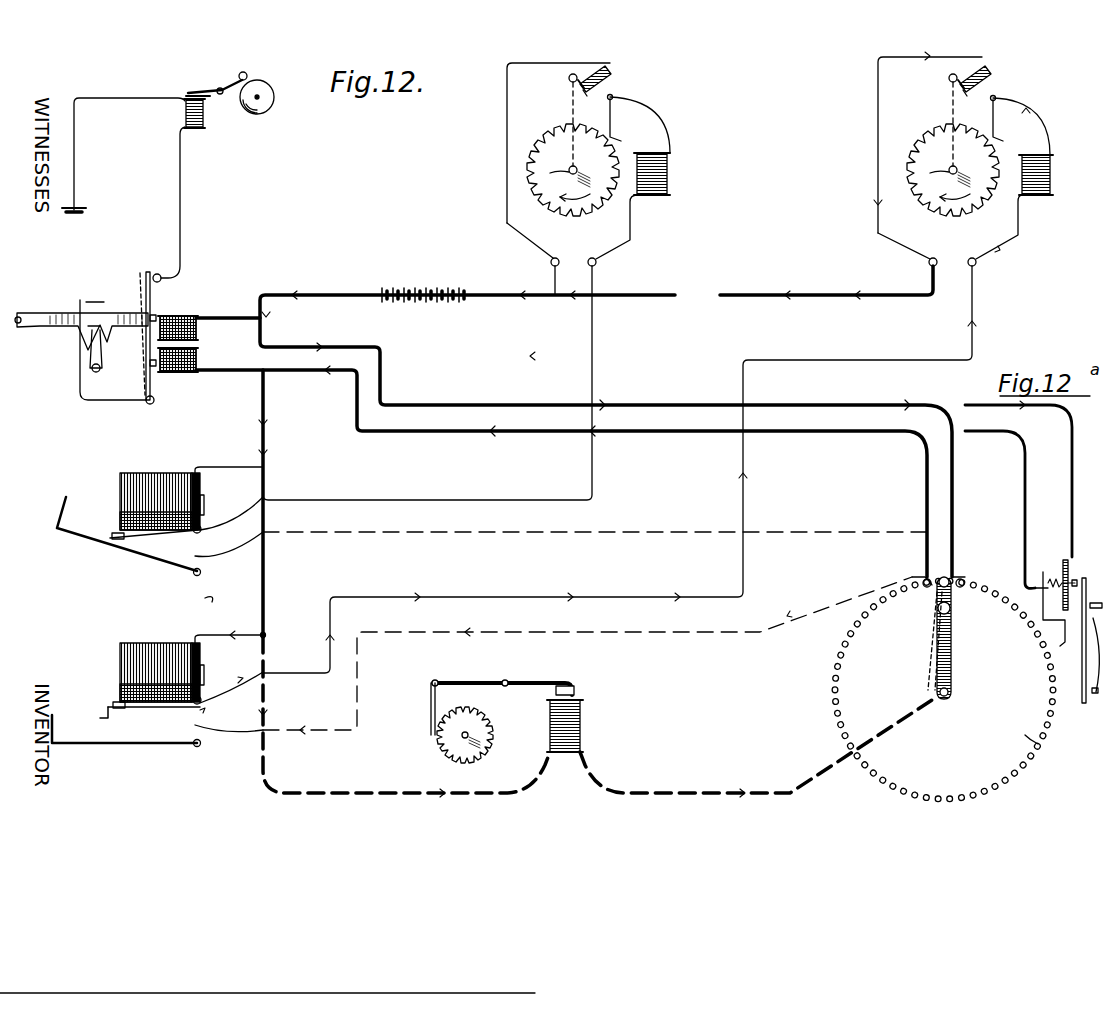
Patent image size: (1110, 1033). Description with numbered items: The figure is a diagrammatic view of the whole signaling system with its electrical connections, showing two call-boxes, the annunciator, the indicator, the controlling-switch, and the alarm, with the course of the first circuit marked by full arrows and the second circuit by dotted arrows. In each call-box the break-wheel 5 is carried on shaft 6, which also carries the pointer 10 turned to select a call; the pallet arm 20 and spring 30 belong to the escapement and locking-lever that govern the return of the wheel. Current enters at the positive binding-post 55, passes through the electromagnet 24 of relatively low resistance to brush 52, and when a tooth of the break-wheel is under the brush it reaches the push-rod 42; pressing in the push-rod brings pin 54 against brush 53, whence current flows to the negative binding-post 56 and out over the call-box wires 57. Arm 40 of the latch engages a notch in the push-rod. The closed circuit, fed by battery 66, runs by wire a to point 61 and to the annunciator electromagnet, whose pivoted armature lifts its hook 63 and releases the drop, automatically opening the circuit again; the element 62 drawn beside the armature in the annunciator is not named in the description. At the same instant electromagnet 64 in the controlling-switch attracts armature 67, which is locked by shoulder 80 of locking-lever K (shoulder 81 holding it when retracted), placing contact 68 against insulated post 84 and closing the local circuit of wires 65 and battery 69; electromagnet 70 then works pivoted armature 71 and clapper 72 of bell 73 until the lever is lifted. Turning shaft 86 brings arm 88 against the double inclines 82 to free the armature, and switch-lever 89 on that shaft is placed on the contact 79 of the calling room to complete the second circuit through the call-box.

In FIG. 12, the break-wheel 5 is at (763, 149).
In FIG. 12, the shaft 6 is at (743, 182).
In FIG. 12A, the pointer 10 is at (1068, 626).
In FIG. 12, the outwardly-extending arm 20 is at (1026, 789).
In FIG. 12, the electromagnet of relatively-low resistance 24 is at (668, 186).
In FIG. 12, the spring 30 is at (884, 803).
In FIG. 12, the arm of latch H 40 is at (820, 673).
In FIG. 12, the push-rod 42 is at (569, 76).
In FIG. 12, the brush 52 is at (612, 128).
In FIG. 12, the brush 53 is at (612, 77).
In FIG. 12, the lug or pin 54 is at (776, 99).
In FIG. 12, the positive or incoming binding-post 55 is at (620, 455).
In FIG. 12, the negative or outgoing binding-post 56 is at (744, 266).
In FIG. 12, the call-box wires 57 is at (507, 135).
In FIG. 12, the point 61 is at (270, 634).
In FIG. 12, the contact 62 is at (116, 534).
In FIG. 12, the hook 63 is at (112, 548).
In FIG. 12, the electromagnet 64 is at (192, 344).
In FIG. 12, the wires of the local circuit 65 is at (78, 152).
In FIG. 12, the battery 66 is at (418, 289).
In FIG. 12, the pivoted armature 67 is at (156, 399).
In FIG. 12, the contact 68 is at (152, 262).
In FIG. 12, the battery of the local circuit 69 is at (66, 222).
In FIG. 12, the electromagnet 70 is at (184, 116).
In FIG. 12, the pivoted armature 71 is at (216, 87).
In FIG. 12, the clapper 72 is at (246, 72).
In FIG. 12, the bell 73 is at (272, 88).
In FIG. 12, the metallic contacts 79 is at (1038, 715).
In FIG. 12, the upper locking-shoulder 80 is at (152, 315).
In FIG. 12, the lower locking-shoulder 81 is at (148, 322).
In FIG. 12, the double inclines 82 is at (88, 336).
In FIG. 12, the post 84 is at (160, 273).
In FIG. 12, the shaft 86 is at (92, 375).
In FIG. 12, the arm 88 is at (88, 365).
In FIG. 12, the switch-lever 89 is at (953, 650).
In FIG. 12A, the switch-lever 89 is at (1083, 682).